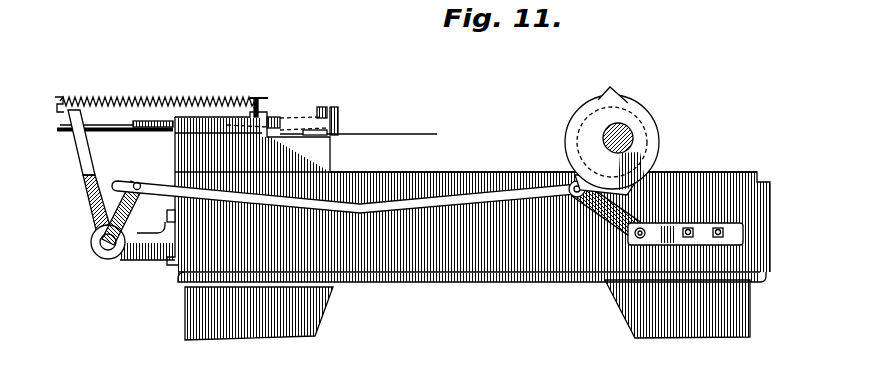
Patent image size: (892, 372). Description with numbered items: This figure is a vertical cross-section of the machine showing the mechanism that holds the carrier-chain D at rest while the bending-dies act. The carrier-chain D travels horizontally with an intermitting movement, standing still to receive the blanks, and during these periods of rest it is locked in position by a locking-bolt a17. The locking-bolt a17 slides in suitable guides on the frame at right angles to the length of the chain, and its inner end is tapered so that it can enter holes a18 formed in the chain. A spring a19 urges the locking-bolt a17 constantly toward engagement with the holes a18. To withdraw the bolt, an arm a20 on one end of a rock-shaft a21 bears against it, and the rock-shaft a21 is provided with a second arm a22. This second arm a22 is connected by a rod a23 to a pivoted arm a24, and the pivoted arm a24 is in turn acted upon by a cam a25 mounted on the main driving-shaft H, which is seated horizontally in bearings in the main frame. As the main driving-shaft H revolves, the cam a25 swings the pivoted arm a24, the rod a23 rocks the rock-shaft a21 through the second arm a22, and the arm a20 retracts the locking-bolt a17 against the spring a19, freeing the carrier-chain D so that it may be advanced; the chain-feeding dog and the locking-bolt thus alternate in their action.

The locking-bolt a17 is at (115, 120).
The holes a18 is at (338, 122).
The spring a19 is at (161, 96).
The arm a20 is at (88, 162).
The rock-shaft a21 is at (108, 247).
The second arm a22 is at (132, 213).
The rod a23 is at (402, 193).
The pivoted arm a24 is at (607, 215).
The cam a25 is at (637, 120).
The carrier-chain D is at (330, 112).
The main driving-shaft H is at (633, 140).